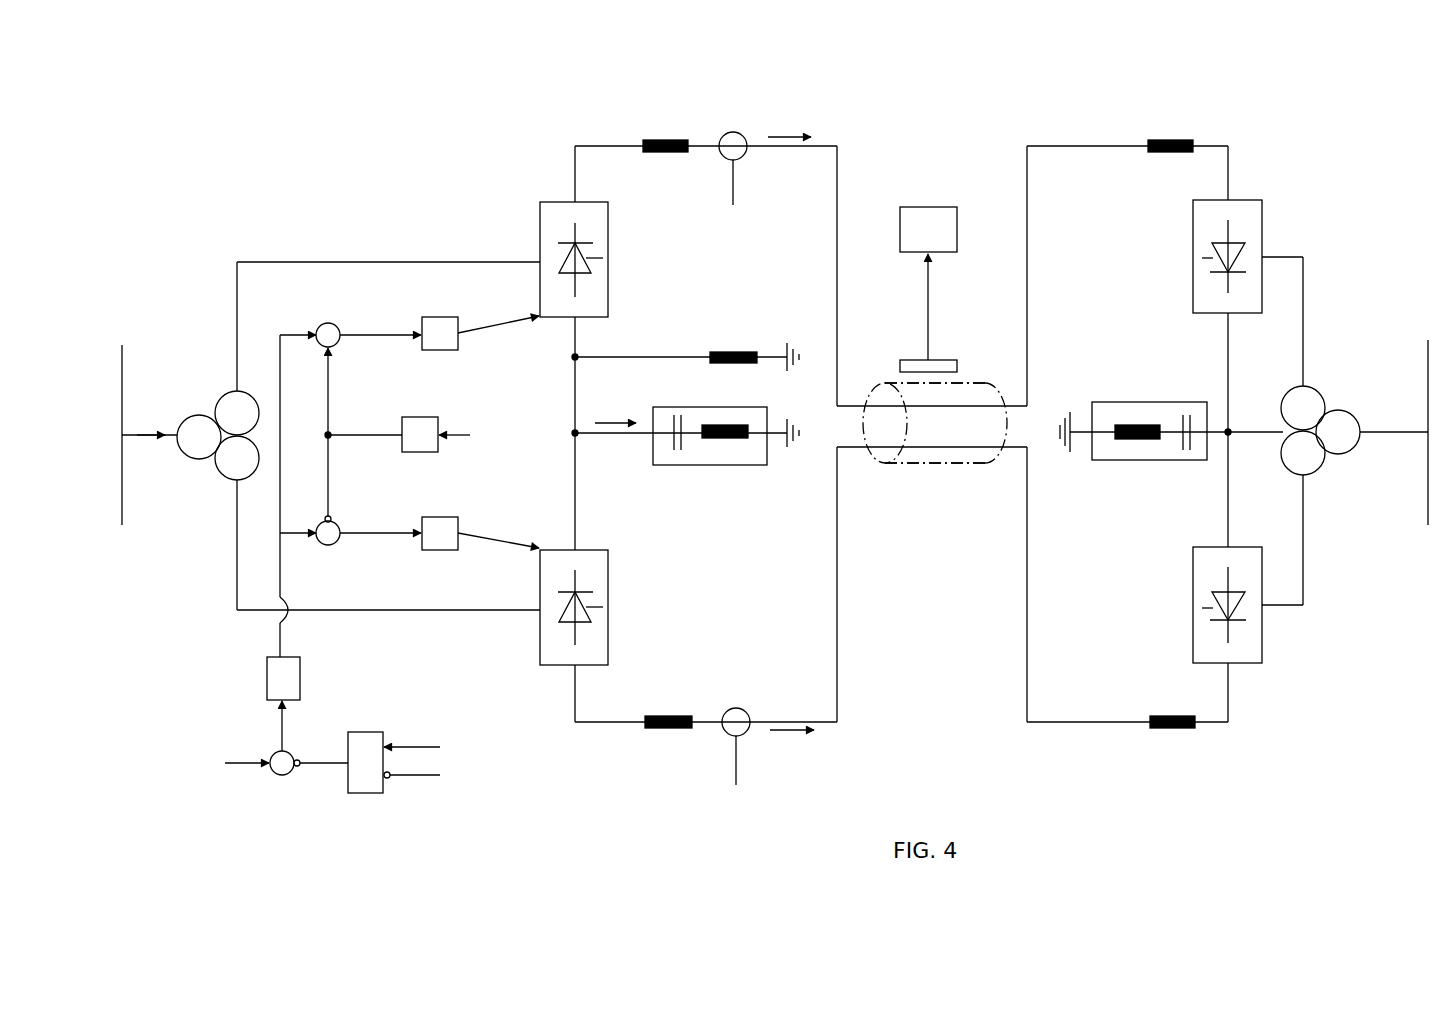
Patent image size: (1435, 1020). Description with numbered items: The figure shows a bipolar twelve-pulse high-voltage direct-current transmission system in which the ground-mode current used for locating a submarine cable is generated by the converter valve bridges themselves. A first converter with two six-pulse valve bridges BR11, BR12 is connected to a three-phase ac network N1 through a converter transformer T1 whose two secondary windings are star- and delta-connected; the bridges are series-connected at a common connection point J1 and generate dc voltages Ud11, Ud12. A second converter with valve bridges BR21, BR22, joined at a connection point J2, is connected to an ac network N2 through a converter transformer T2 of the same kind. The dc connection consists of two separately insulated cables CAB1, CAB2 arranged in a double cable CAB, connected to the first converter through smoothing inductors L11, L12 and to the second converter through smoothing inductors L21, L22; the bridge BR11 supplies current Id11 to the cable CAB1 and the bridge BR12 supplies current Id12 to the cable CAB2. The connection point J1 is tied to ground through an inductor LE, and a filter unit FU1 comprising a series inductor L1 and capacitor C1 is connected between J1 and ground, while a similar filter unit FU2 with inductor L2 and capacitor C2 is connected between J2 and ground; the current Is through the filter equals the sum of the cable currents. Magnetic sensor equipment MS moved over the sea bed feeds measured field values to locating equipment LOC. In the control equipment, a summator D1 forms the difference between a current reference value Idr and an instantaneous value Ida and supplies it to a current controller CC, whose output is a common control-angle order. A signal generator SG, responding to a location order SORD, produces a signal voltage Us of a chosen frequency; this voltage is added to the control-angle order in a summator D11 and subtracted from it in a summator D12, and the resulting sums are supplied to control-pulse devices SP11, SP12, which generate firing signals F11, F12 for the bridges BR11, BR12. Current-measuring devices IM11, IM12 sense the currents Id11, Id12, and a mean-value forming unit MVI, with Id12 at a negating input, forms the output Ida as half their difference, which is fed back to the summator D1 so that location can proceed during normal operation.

The three-phase electric ac network N1 is at (123, 485).
The converter transformer T1 is at (207, 403).
The summator D11 is at (328, 322).
The summator D12 is at (331, 547).
The control pulse device SP11 is at (433, 352).
The control pulse device SP12 is at (433, 552).
The firing signals F11 is at (498, 316).
The firing signals F12 is at (498, 525).
The signal generator SG is at (420, 417).
The signal voltage Us is at (363, 464).
The location order SORD is at (488, 435).
The current controller CC is at (300, 673).
The summator D1 is at (282, 777).
The reference value Idr is at (228, 762).
The instantaneous value Ida is at (324, 748).
The mean-value forming unit MVI is at (370, 795).
The current Id11 is at (598, 428).
The current Id12 is at (603, 774).
The six-pulse valve bridge BR11 is at (540, 218).
The six-pulse valve bridge BR12 is at (538, 647).
The dc voltage Ud11 is at (652, 258).
The dc voltage Ud12 is at (656, 605).
The smoothing inductor L11 is at (667, 140).
The smoothing inductor L12 is at (672, 728).
The current-measuring device IM11 is at (733, 130).
The current-measuring device IM12 is at (738, 707).
The inductor LE is at (742, 350).
The connection point J1 is at (578, 436).
The current Is is at (615, 410).
The filter unit FU1 is at (760, 466).
The capacitor C1 is at (681, 445).
The inductor L1 is at (733, 440).
The locating equipment LOC is at (913, 207).
The magnetic sensor equipment MS is at (915, 360).
The double cable CAB is at (918, 465).
The cable CAB1 is at (1002, 397).
The cable CAB2 is at (978, 446).
The smoothing inductor L21 is at (1165, 133).
The smoothing inductor L22 is at (1167, 730).
The six-pulse valve bridge BR21 is at (1262, 215).
The six-pulse valve bridge BR22 is at (1265, 645).
The connection point J2 is at (1232, 433).
The filter unit FU2 is at (1187, 402).
The inductor L2 is at (1127, 440).
The capacitor C2 is at (1180, 440).
The converter transformer T2 is at (1342, 382).
The three-phase electric ac network N2 is at (1425, 480).